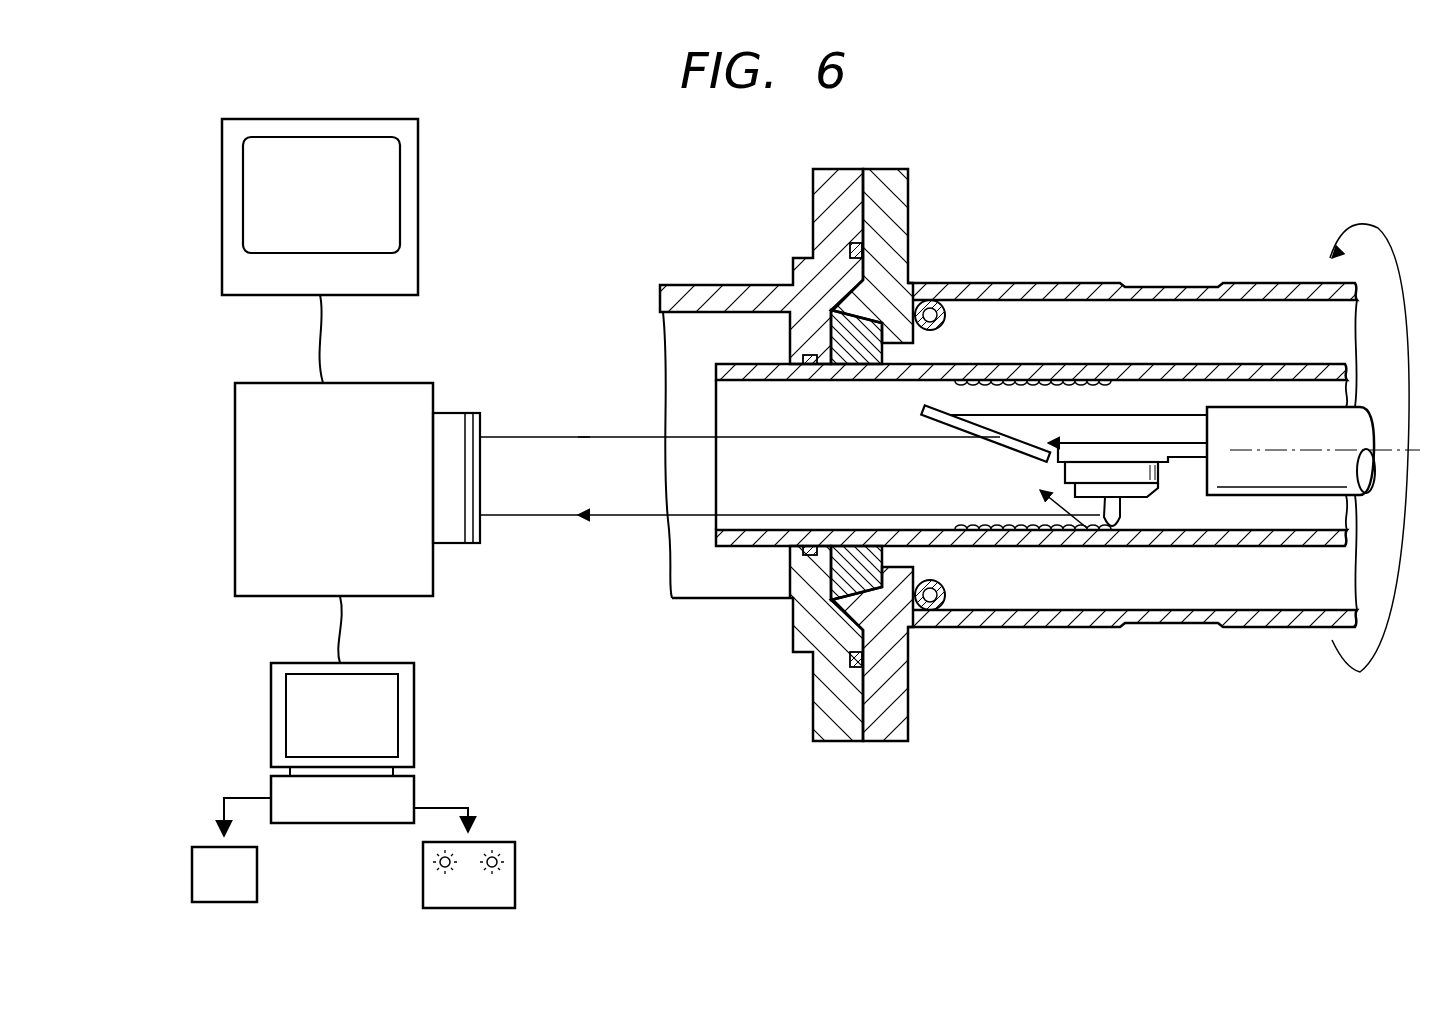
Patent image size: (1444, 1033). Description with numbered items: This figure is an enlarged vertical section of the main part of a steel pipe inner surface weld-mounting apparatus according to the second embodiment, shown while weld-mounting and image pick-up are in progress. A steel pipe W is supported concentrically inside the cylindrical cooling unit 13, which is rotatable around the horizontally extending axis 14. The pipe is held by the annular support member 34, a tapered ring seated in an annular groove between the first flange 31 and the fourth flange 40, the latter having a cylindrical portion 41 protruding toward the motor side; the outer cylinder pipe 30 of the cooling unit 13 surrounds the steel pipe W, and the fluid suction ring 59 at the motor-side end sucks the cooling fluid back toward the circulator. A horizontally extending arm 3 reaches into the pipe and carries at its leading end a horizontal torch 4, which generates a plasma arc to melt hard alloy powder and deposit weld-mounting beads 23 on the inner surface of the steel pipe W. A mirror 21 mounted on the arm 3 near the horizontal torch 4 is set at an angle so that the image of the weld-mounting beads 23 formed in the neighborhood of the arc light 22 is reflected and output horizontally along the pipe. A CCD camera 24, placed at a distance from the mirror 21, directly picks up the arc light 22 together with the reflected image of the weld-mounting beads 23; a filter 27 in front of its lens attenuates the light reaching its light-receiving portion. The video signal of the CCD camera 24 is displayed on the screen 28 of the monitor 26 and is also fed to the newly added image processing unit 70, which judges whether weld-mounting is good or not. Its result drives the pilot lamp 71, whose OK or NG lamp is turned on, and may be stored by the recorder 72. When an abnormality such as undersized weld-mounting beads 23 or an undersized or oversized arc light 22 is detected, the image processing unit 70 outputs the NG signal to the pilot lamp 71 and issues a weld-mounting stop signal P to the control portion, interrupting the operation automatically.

The arm 3 is at (1262, 407).
The horizontal torch 4 is at (1160, 492).
The cooling unit 13 is at (1110, 276).
The axis 14 is at (1380, 490).
The mirror 21 is at (1013, 440).
The arc light 22 is at (1120, 530).
The weld-mounting beads 23 is at (1078, 548).
The CCD camera 24 is at (235, 504).
The monitor 26 is at (418, 165).
The filter 27 is at (480, 528).
The screen 28 is at (400, 228).
The outer cylinder pipe 30 is at (1287, 283).
The first flange 31 is at (908, 200).
The annular support member 34 is at (908, 280).
The fourth flange 40 is at (813, 186).
The cylindrical portion 41 is at (708, 285).
The fluid suction ring 59 is at (936, 612).
The image processing unit 70 is at (414, 682).
The pilot lamp 71 is at (515, 852).
The recorder 72 is at (192, 870).
The steel pipe W is at (1283, 548).
The feed direction X is at (1058, 735).
The weld-mounting stop signal P is at (414, 786).